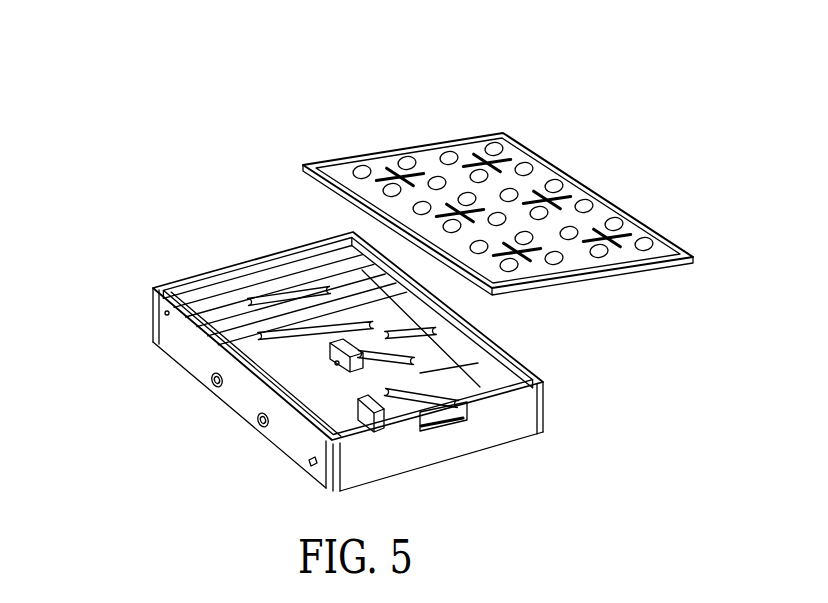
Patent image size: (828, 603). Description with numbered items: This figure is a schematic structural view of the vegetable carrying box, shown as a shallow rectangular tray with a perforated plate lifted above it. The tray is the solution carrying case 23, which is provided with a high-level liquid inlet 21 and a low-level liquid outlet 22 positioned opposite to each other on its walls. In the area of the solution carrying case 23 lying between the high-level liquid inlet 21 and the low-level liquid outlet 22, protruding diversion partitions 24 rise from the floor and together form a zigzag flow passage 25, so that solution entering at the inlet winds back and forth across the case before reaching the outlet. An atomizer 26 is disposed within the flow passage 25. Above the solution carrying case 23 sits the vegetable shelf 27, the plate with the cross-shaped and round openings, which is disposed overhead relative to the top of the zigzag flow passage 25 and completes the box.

The high-level liquid inlet 21 is at (150, 330).
The low-level liquid outlet 22 is at (310, 465).
The solution carrying case 23 is at (203, 272).
The diversion partitions 24 is at (460, 370).
The zigzag flow passage 25 is at (337, 282).
The atomizer 26 is at (333, 367).
The vegetable shelf 27 is at (430, 160).